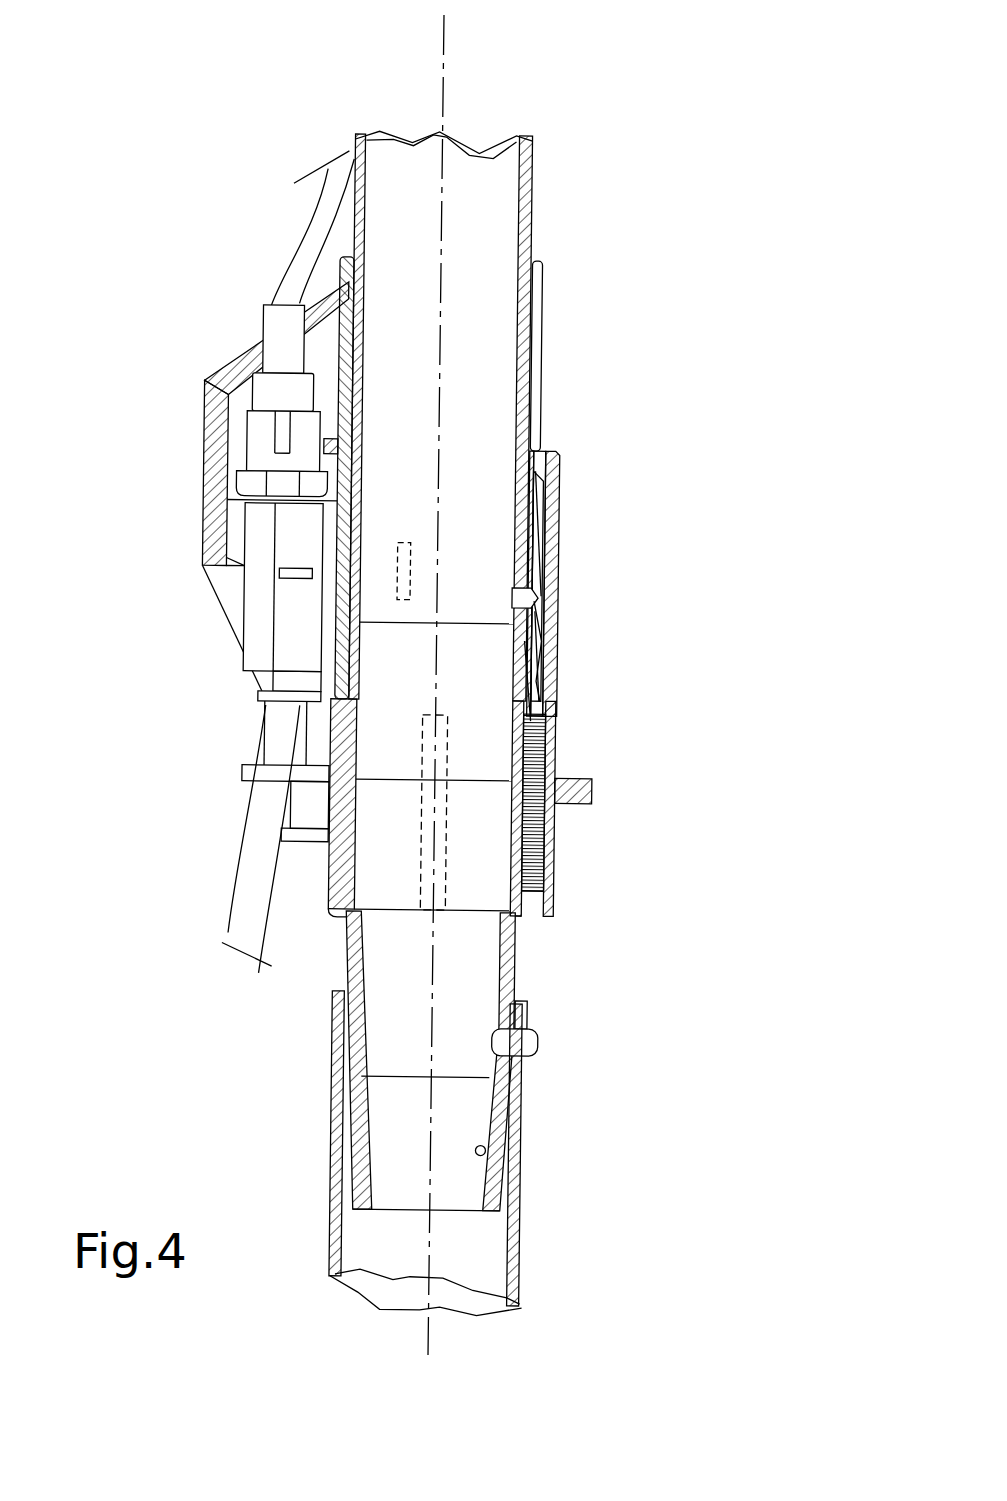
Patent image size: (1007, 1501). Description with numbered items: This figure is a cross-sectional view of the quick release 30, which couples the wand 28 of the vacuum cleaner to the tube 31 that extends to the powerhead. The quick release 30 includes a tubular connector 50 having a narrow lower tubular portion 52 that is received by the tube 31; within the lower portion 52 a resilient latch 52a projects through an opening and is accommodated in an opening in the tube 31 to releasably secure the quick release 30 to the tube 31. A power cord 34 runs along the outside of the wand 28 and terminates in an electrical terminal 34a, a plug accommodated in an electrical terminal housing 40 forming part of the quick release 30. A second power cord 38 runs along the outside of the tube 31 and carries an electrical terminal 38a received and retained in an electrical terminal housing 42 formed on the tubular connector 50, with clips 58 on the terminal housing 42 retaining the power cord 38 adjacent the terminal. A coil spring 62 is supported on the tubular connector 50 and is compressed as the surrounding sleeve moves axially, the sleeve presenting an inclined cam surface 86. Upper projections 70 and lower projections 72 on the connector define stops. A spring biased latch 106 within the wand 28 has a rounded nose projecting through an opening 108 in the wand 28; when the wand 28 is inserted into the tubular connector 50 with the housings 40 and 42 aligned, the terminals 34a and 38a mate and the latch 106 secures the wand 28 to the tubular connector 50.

The wand 28 is at (526, 200).
The quick release 30 is at (563, 462).
The tube 31 is at (528, 1270).
The power cord 34 is at (312, 235).
The electrical terminal 34a is at (263, 428).
The second power cord 38 is at (246, 882).
The electrical terminal 38a is at (260, 598).
The electrical terminal housing 40 is at (204, 350).
The electrical terminal housing 42 is at (195, 537).
The tubular connector 50 is at (333, 935).
The lower tubular portion 52 is at (526, 975).
The resilient latch 52a is at (543, 1032).
The clips 58 is at (262, 697).
The coil spring 62 is at (548, 752).
The upper projections 70 is at (403, 585).
The lower projections 72 is at (440, 728).
The cam surface 86 is at (538, 578).
The spring biased latch 106 is at (541, 592).
The opening 108 is at (541, 660).